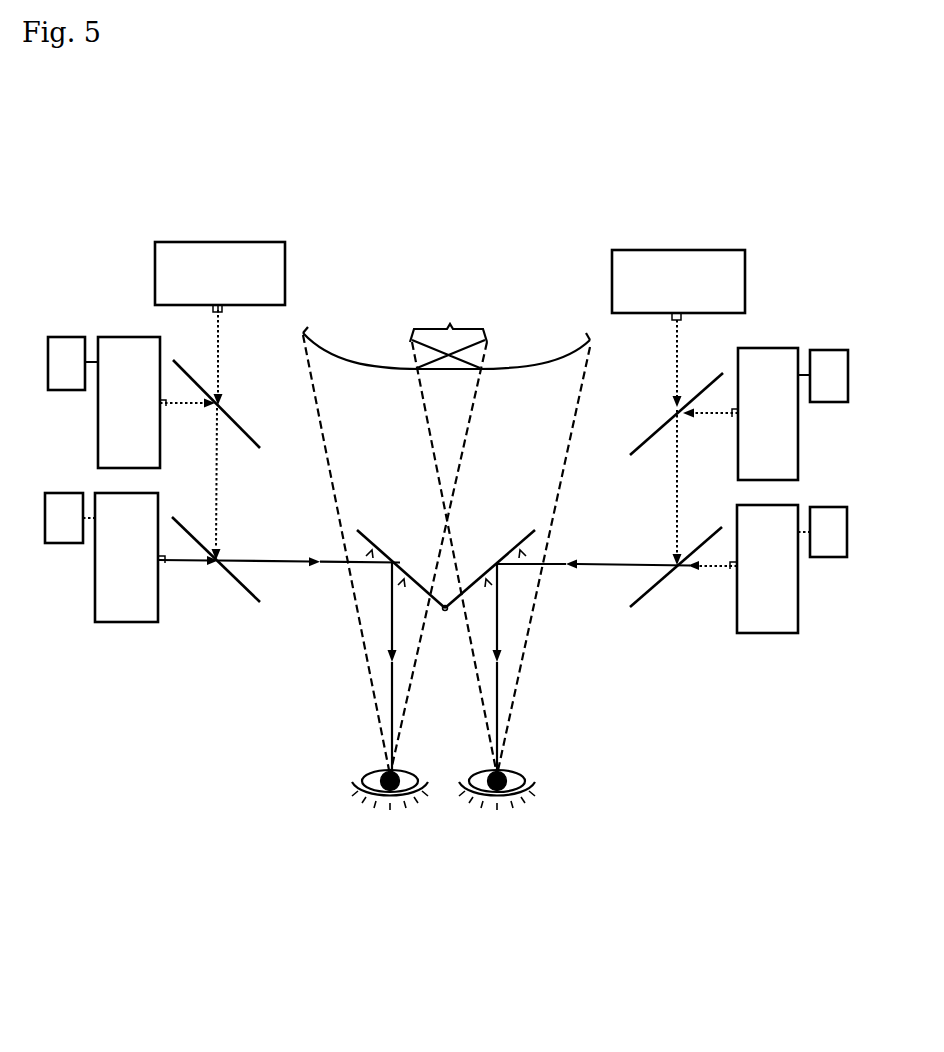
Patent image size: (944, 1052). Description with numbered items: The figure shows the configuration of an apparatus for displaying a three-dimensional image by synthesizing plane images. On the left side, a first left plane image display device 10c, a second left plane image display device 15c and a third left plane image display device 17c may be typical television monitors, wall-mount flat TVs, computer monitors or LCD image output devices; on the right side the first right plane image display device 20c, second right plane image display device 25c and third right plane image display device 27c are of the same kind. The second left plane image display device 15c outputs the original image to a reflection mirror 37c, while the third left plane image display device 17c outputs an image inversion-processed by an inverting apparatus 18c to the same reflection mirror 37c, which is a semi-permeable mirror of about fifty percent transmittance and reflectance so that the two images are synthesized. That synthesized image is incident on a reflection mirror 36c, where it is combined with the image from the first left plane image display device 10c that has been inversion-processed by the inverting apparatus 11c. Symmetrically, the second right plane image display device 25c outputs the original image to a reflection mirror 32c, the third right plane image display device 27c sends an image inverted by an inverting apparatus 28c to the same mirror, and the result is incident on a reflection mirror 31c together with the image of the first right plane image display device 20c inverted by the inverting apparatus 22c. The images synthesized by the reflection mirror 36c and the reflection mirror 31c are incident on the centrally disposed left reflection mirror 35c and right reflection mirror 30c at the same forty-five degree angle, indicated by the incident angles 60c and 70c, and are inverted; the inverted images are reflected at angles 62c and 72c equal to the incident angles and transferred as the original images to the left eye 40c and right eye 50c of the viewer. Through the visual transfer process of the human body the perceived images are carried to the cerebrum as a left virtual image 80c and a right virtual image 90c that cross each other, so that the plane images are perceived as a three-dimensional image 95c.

The first left plane image display device 10c is at (130, 620).
The inverting apparatus 11c is at (62, 540).
The second left plane image display device 15c is at (194, 248).
The third left plane image display device 17c is at (120, 343).
The inverting apparatus 18c is at (64, 342).
The first right plane image display device 20c is at (762, 632).
The inverting apparatus 22c is at (830, 554).
The second right plane image display device 25c is at (707, 257).
The third right plane image display device 27c is at (778, 352).
The inverting apparatus 28c is at (830, 353).
The right reflection mirror 30c is at (523, 543).
The reflection mirror 31c is at (647, 600).
The reflection mirror 32c is at (652, 433).
The left reflection mirror 35c is at (370, 543).
The reflection mirror 36c is at (243, 593).
The reflection mirror 37c is at (243, 427).
The left eye 40c is at (387, 805).
The right eye 50c is at (503, 805).
The incident angle of 45 degrees 60c is at (351, 578).
The reflection angle 62c is at (392, 687).
The incident angle of 45 degrees 70c is at (538, 578).
The reflection angle 72c is at (498, 690).
The left virtual image 80c is at (335, 352).
The right virtual image 90c is at (562, 352).
The 3-dimensional image 95c is at (448, 329).